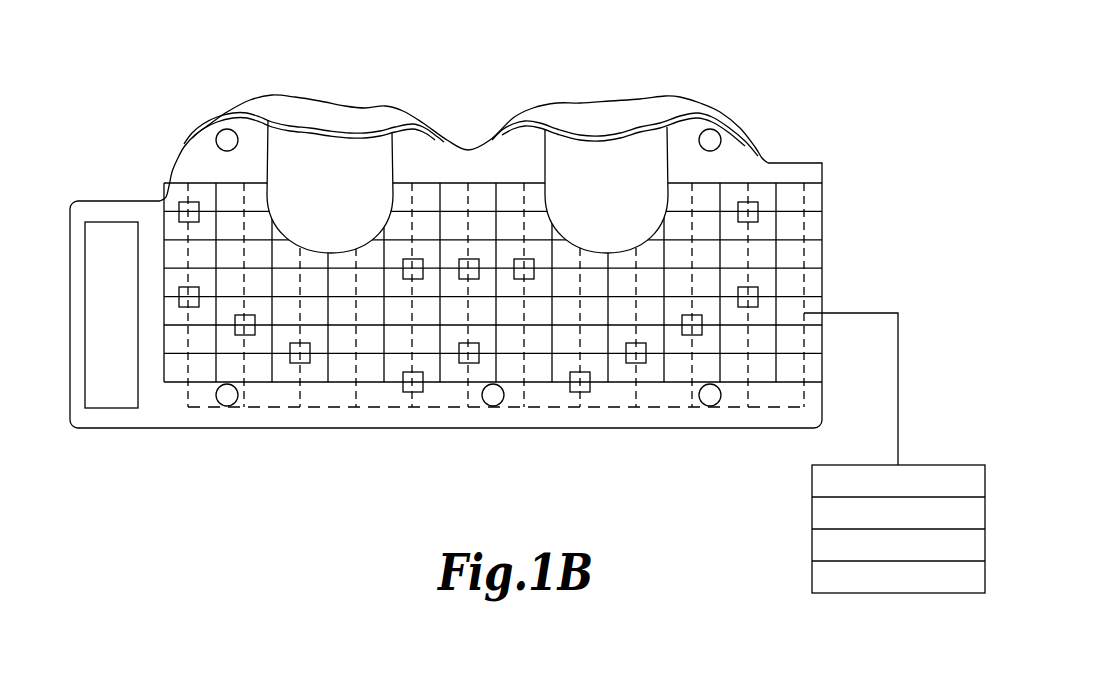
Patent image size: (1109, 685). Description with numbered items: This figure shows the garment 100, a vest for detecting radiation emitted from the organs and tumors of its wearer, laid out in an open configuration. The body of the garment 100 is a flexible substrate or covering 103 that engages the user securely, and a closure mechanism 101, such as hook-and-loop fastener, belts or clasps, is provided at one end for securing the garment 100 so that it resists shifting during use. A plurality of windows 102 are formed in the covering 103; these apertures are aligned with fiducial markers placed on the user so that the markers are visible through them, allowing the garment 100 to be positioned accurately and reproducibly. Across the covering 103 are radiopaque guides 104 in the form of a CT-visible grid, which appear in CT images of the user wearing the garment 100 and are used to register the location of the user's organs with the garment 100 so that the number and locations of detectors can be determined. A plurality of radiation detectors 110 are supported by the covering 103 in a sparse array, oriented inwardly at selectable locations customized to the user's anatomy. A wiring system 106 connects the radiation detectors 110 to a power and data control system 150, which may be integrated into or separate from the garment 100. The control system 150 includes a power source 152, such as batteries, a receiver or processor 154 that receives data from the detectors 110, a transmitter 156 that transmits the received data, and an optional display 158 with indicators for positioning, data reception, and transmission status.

The garment 100 is at (703, 98).
The closure mechanism 101 is at (123, 230).
The windows 102 is at (216, 140).
The covering 103 is at (740, 160).
The guides 104 is at (796, 183).
The wiring system 106 is at (541, 407).
The radiation detectors 110 is at (758, 203).
The power and data control system 150 is at (851, 498).
The power source 152 is at (814, 481).
The receiver 154 is at (814, 516).
The transmitter 156 is at (814, 546).
The display 158 is at (814, 576).